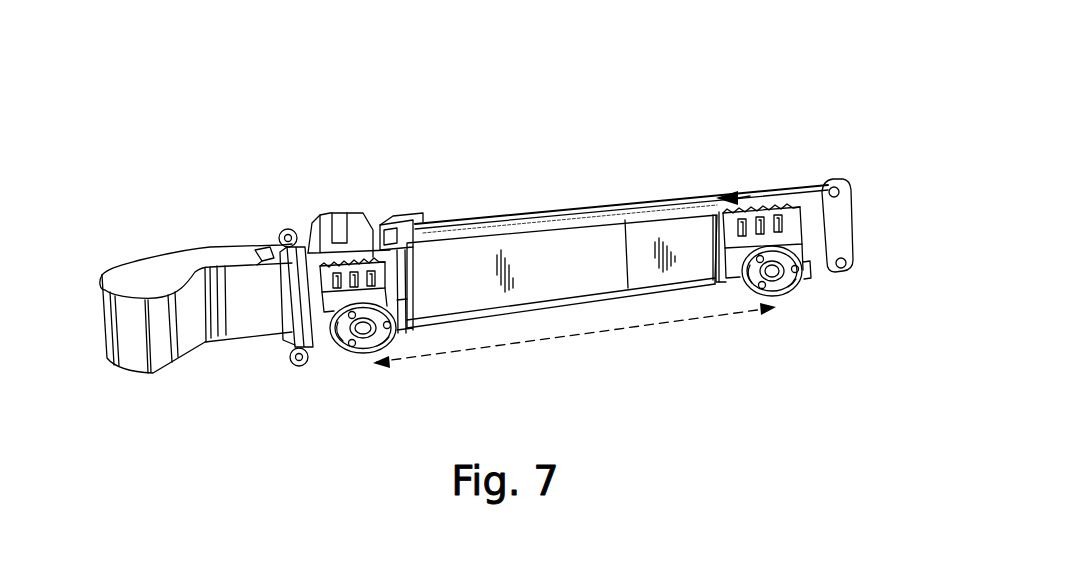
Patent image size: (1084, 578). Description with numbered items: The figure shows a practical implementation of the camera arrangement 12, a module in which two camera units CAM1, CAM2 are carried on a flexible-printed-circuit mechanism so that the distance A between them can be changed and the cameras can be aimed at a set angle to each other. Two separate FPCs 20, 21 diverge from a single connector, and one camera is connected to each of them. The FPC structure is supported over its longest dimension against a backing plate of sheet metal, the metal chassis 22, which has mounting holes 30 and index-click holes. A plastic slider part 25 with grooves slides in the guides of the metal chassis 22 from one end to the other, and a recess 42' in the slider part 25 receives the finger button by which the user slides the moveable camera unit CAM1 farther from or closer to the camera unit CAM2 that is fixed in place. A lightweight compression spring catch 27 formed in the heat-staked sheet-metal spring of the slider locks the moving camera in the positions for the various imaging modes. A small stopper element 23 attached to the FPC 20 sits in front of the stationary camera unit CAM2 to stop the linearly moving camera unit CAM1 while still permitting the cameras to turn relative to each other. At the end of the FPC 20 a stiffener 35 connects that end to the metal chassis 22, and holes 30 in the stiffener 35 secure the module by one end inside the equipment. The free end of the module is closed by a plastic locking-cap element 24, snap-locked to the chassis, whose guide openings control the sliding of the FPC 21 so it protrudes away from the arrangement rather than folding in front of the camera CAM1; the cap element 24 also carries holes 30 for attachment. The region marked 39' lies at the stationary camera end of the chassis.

The camera arrangement 12 is at (528, 153).
The FPC 20 is at (228, 247).
The FPC 21 is at (130, 276).
The metal chassis 22 is at (658, 202).
The stopper element 23 is at (707, 195).
The locking-cap element 24 is at (256, 248).
The slider part 25 is at (330, 213).
The compression spring catch 27 is at (405, 212).
The holes 30 is at (834, 186).
The stiffener 35 is at (842, 205).
The connector block 39' is at (763, 184).
The recess 42' is at (357, 142).
The distance A is at (574, 336).
The camera unit CAM1 is at (367, 378).
The camera unit CAM2 is at (776, 328).